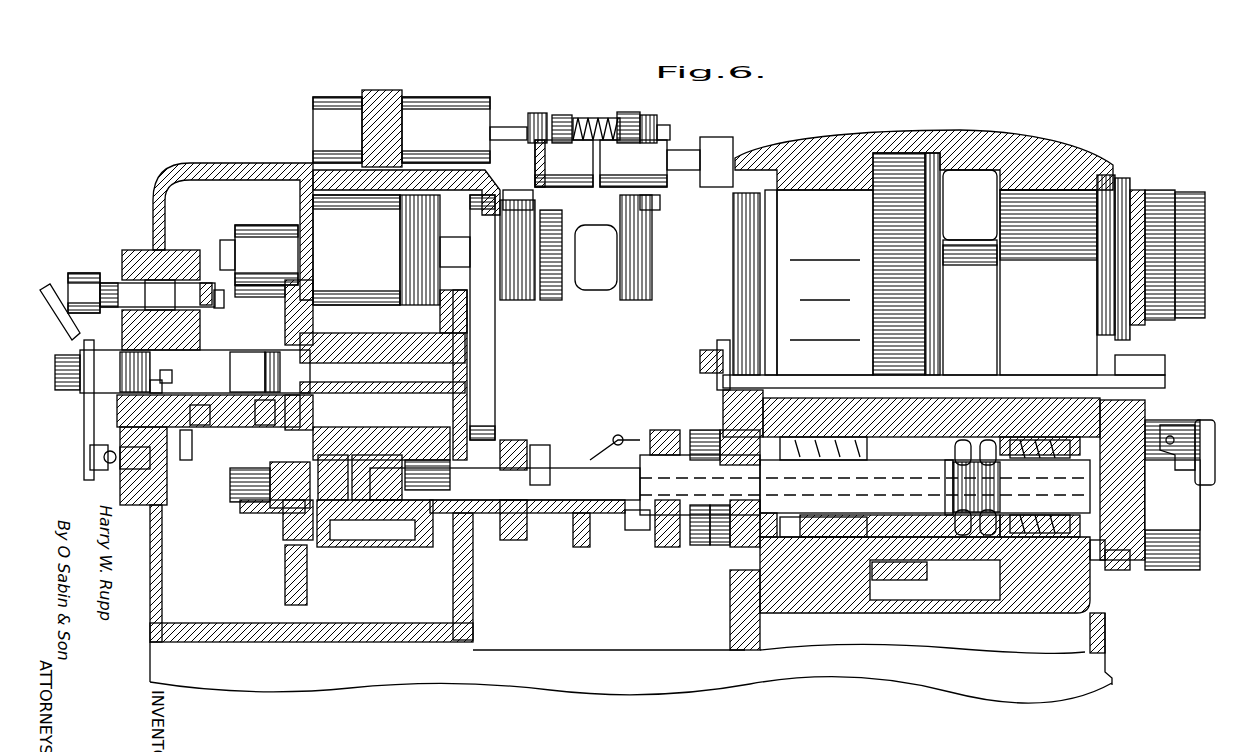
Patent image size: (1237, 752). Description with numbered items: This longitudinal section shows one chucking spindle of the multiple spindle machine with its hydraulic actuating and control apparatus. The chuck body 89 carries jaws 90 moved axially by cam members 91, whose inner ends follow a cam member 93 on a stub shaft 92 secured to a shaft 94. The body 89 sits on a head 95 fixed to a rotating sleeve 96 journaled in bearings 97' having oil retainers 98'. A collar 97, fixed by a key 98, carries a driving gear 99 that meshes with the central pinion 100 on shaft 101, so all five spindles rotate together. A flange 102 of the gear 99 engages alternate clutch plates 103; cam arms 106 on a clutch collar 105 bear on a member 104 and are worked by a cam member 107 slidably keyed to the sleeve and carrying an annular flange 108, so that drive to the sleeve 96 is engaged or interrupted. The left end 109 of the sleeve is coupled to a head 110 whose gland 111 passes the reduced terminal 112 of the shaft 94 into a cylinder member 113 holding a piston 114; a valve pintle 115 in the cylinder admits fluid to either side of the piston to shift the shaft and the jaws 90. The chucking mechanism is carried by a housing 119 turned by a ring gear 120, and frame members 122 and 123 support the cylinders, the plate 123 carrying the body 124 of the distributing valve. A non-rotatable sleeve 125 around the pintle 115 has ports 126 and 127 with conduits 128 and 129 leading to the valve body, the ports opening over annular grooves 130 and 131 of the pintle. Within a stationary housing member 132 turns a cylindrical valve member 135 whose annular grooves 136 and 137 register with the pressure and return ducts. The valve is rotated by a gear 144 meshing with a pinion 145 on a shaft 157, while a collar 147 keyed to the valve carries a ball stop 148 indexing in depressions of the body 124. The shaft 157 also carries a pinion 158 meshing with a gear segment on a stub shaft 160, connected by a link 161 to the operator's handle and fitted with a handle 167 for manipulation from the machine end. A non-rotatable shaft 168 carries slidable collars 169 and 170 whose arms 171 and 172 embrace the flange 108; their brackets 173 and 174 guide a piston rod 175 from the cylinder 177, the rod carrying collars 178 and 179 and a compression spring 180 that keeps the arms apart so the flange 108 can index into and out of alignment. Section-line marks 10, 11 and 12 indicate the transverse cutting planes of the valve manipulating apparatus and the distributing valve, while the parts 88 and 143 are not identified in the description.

The section line 10 is at (187, 197).
The section line 11 is at (232, 300).
The section line 12 is at (284, 300).
The end cap 88 is at (1160, 420).
The chuck body 89 is at (1170, 235).
The jaws 90 is at (1200, 448).
The cam members 91 is at (1185, 440).
The stub shaft 92 is at (1130, 570).
The cam member 93 is at (1160, 545).
The shaft 94 is at (1085, 480).
The head 95 is at (1143, 385).
The rotating sleeve 96 is at (942, 500).
The collar 97 is at (876, 519).
The bearings 97' is at (852, 484).
The key 98 is at (885, 487).
The oil retainers 98' is at (1118, 584).
The driving gear 99 is at (735, 545).
The central pinion 100 is at (724, 415).
The shaft 101 is at (805, 380).
The axially extending flange 102 is at (690, 545).
The clutch plates 103 is at (700, 547).
The member 104 is at (730, 498).
The clutch collar 105 is at (640, 528).
The cam arms 106 is at (632, 435).
The cam member 107 is at (615, 290).
The annular flange 108 is at (580, 300).
The left end of sleeve 109 is at (538, 445).
The head 110 is at (440, 562).
The gland 111 is at (445, 465).
The reduced terminal 112 is at (518, 520).
The cylinder member 113 is at (372, 550).
The piston 114 is at (375, 470).
The valve pintle 115 is at (332, 470).
The housing 119 is at (1020, 305).
The ring gear 120 is at (885, 180).
The frame member 122 is at (492, 312).
The frame plate 123 is at (308, 305).
The body of distributing valve 124 is at (258, 284).
The terminal sleeve 125 is at (265, 556).
The fluid port 126 is at (240, 470).
The fluid port 127 is at (280, 500).
The fluid conduit 128 is at (265, 425).
The fluid conduit 129 is at (254, 372).
The annular groove 130 is at (258, 513).
The annular groove 131 is at (285, 560).
The stationary housing member 132 is at (125, 265).
The cylindrical valve member 135 is at (195, 371).
The annular groove 136 is at (150, 385).
The annular groove 137 is at (163, 378).
The collar 143 is at (655, 160).
The gear 144 is at (186, 446).
The driving pinion 145 is at (187, 280).
The collar 147 is at (212, 425).
The ball stop 148 is at (220, 285).
The shaft 157 is at (158, 285).
The pinion 158 is at (88, 275).
The stub shaft 160 is at (70, 380).
The link 161 is at (92, 457).
The handle 167 is at (60, 320).
The non-rotatable shaft 168 is at (688, 160).
The collar 169 is at (676, 150).
The collar 170 is at (596, 118).
The arm 171 is at (660, 200).
The arm 172 is at (548, 183).
The bracket 173 is at (628, 128).
The bracket 174 is at (562, 115).
The piston rod 175 is at (495, 133).
The cylinder 177 is at (448, 135).
The collar 178 is at (650, 120).
The collar 179 is at (536, 113).
The compression spring 180 is at (605, 118).